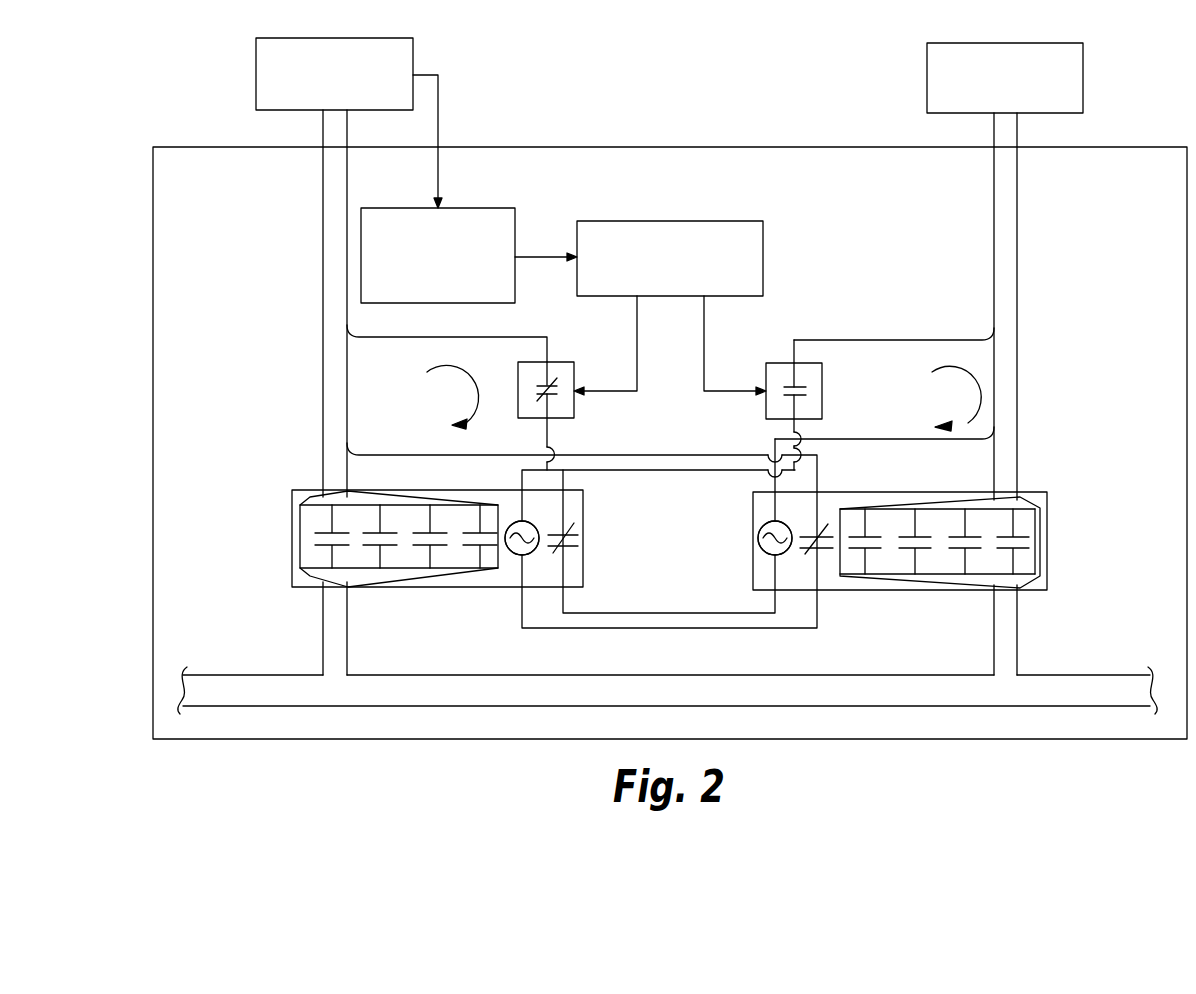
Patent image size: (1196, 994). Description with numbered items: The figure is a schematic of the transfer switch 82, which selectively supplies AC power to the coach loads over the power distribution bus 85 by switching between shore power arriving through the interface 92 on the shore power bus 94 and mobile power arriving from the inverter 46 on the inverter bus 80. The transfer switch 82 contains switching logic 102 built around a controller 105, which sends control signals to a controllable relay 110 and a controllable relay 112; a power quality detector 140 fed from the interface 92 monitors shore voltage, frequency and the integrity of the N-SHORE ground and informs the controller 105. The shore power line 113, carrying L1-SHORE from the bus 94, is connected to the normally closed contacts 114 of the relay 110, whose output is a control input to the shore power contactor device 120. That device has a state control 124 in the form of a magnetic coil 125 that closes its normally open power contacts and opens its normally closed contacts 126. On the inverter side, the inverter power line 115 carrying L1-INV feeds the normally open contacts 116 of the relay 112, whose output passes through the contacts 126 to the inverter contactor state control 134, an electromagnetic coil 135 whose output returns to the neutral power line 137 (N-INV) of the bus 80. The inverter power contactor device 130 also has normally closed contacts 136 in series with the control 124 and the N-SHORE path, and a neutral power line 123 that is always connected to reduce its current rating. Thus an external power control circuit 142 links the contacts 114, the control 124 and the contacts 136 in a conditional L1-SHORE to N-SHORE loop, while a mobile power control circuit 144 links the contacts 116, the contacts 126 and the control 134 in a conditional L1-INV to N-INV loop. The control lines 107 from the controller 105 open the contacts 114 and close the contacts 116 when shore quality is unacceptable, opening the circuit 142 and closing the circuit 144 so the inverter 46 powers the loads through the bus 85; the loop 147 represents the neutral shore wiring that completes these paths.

The inverter 46 is at (1016, 107).
The inverter bus 80 is at (1017, 255).
The transfer switch 82 is at (856, 190).
The power distribution bus 85 is at (856, 701).
The interface 92 is at (347, 103).
The shore power bus 94 is at (347, 408).
The switching logic 102 is at (1068, 226).
The controller 105 is at (763, 245).
The control lines 107 is at (666, 402).
The controllable relay 110 is at (566, 418).
The controllable relay 112 is at (822, 391).
The shore power line 113 is at (392, 338).
The normally closed contacts 114 is at (548, 370).
The inverter power line 115 is at (934, 338).
The normally open contacts 116 is at (794, 365).
The shore power contactor device 120 is at (422, 534).
The neutral power line 123 is at (963, 553).
The state control 124 is at (508, 509).
The magnetic coil 125 is at (517, 558).
The normally closed contacts 126 is at (576, 535).
The inverter power contactor device 130 is at (913, 536).
The inverter contactor state control 134 is at (752, 554).
The electromagnetic coil 135 is at (772, 522).
The normally closed contacts 136 is at (823, 552).
The neutral power line 137 is at (855, 444).
The power quality detector 140 is at (461, 207).
The external power control circuit 142 is at (450, 361).
The mobile/generated power control circuit 144 is at (950, 360).
The neutral shore line 147 is at (705, 455).